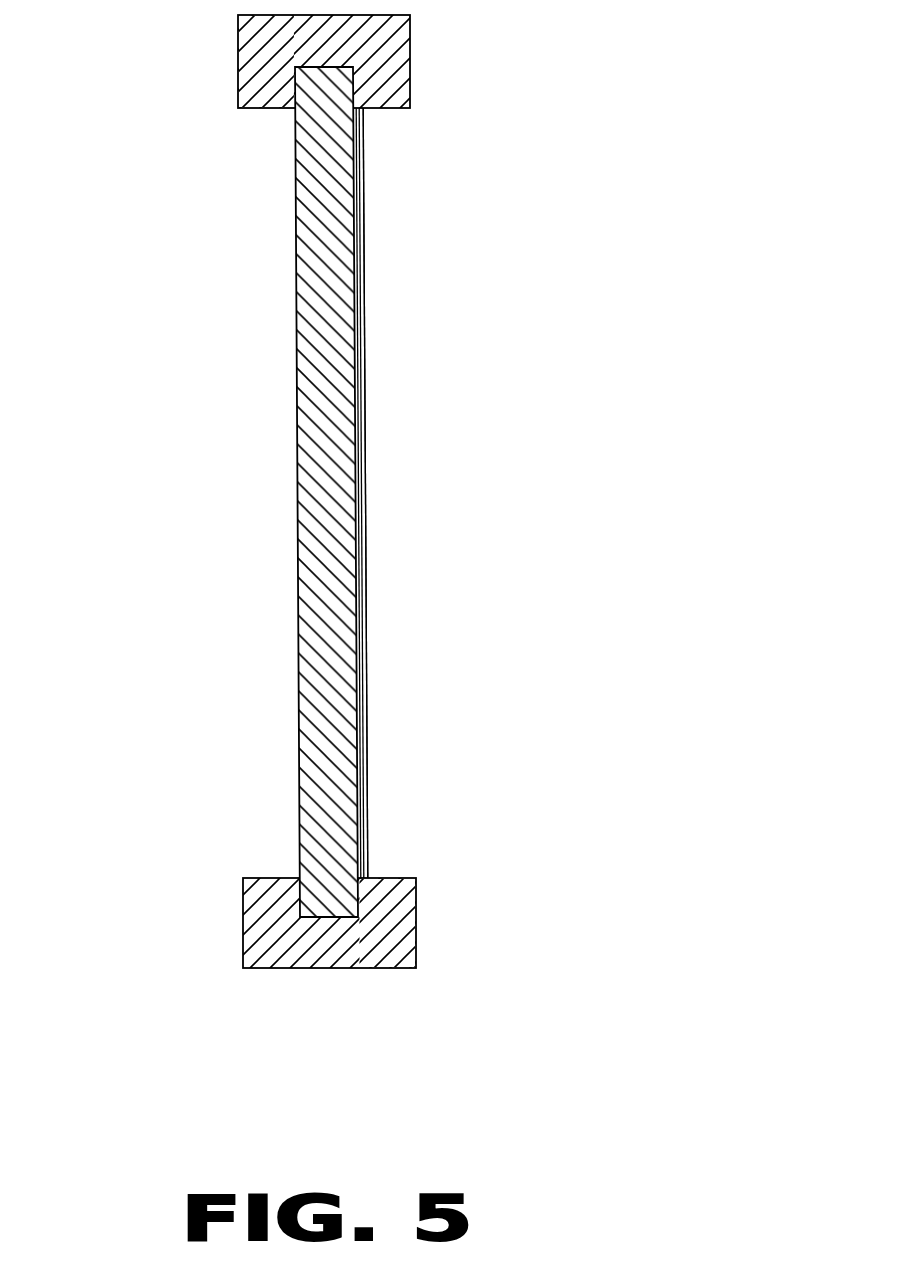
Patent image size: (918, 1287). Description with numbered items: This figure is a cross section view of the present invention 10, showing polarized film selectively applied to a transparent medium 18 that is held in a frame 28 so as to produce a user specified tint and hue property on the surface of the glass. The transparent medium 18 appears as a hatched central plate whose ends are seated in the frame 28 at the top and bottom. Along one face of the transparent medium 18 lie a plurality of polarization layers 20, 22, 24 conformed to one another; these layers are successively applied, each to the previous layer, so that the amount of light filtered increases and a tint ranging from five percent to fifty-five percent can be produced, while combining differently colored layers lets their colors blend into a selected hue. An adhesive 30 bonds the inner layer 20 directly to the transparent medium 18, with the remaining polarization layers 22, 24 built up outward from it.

The present invention 10 is at (165, 474).
The transparent medium 18 is at (343, 420).
The inner polarization layer 20 is at (363, 592).
The polarization layer 22 is at (362, 232).
The polarization layer 24 is at (365, 728).
The frame 28 is at (398, 112).
The adhesive 30 is at (360, 490).